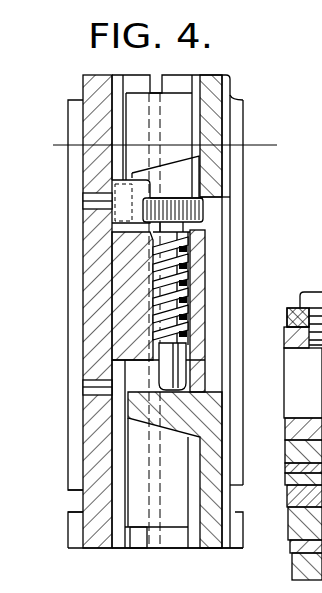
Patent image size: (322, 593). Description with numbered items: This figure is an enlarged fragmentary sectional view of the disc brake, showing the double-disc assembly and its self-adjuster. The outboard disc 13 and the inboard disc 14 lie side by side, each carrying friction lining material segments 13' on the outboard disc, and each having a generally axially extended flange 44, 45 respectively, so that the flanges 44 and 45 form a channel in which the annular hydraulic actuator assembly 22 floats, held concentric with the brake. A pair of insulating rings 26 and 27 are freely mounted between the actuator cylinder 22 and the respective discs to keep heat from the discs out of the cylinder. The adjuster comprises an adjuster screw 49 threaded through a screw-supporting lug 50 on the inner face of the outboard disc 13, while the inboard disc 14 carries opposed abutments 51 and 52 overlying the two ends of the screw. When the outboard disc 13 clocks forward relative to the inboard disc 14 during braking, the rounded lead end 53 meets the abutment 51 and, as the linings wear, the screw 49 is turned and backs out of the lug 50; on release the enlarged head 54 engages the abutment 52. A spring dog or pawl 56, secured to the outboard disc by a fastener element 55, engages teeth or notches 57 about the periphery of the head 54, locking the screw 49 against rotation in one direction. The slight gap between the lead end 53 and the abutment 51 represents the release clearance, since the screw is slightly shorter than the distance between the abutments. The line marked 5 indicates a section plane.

The section line 5- 5 is at (53, 125).
The outboard disc 13 is at (135, 311).
The friction lining material segments 13' is at (73, 346).
The inboard disc 14 is at (226, 78).
The hydraulic actuator assembly 22 is at (166, 518).
The insulating ring 26 is at (195, 460).
The insulating ring 27 is at (117, 500).
The axially extended flange 44 is at (132, 548).
The axially extended flange 45 is at (177, 547).
The adjuster screw 49 is at (204, 268).
The screw-supporting lug 50 is at (204, 241).
The abutment 51 is at (172, 427).
The abutment 52 is at (170, 160).
The rounded lead end 53 is at (188, 370).
The enlarged head 54 is at (204, 205).
The fastener element 55 is at (83, 203).
The spring dog or pawl 56 is at (103, 235).
The teeth or notches 57 is at (206, 216).